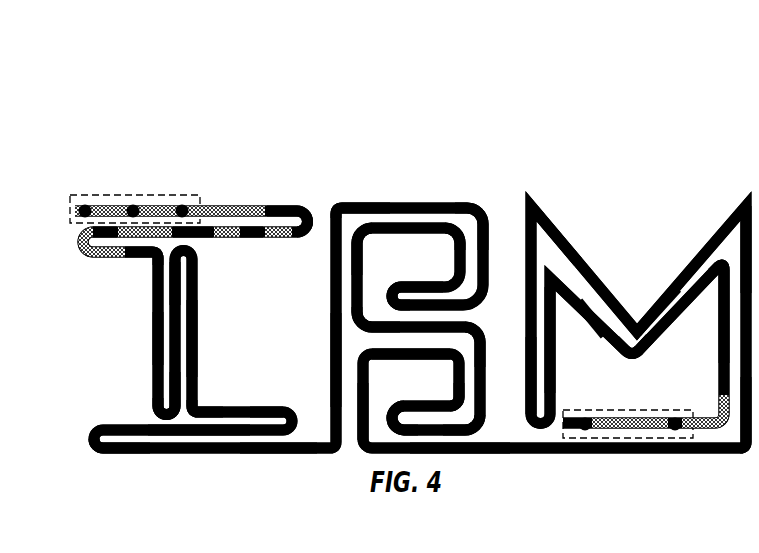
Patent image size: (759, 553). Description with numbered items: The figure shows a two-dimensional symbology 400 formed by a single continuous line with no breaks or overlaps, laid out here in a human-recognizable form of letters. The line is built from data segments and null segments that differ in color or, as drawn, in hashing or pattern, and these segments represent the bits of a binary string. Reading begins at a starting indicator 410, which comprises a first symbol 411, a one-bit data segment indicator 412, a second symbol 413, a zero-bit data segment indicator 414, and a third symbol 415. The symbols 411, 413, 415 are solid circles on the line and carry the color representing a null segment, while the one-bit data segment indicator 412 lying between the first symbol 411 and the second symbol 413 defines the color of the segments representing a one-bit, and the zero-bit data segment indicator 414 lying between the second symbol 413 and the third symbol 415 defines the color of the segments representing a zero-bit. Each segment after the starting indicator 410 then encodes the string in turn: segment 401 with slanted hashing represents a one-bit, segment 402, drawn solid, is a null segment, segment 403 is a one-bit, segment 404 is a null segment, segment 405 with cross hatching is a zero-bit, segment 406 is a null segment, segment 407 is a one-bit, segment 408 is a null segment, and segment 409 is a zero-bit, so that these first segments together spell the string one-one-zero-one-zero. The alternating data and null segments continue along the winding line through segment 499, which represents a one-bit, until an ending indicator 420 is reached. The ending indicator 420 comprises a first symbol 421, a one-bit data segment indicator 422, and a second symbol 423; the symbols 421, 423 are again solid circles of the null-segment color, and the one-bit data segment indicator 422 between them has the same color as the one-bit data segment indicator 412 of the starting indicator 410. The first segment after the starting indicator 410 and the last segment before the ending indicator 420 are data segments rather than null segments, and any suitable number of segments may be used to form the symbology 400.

The two-dimensional symbology 400 is at (60, 51).
The segment 401 is at (220, 206).
The segment 402 is at (292, 206).
The segment 403 is at (281, 238).
The segment 404 is at (251, 238).
The segment 405 is at (216, 238).
The segment 406 is at (198, 238).
The segment 407 is at (138, 238).
The segment 408 is at (107, 238).
The segment 409 is at (85, 244).
The starting indicator 410 is at (70, 211).
The first symbol 411 is at (82, 205).
The 1-bit data segment indicator 412 is at (110, 206).
The second symbol 413 is at (132, 205).
The 0-bit data segment indicator 414 is at (153, 206).
The third symbol 415 is at (181, 205).
The ending indicator 420 is at (608, 410).
The first symbol 421 is at (677, 432).
The 1-bit data segment indicator 422 is at (628, 430).
The second symbol 423 is at (590, 432).
The segment 499 is at (706, 432).